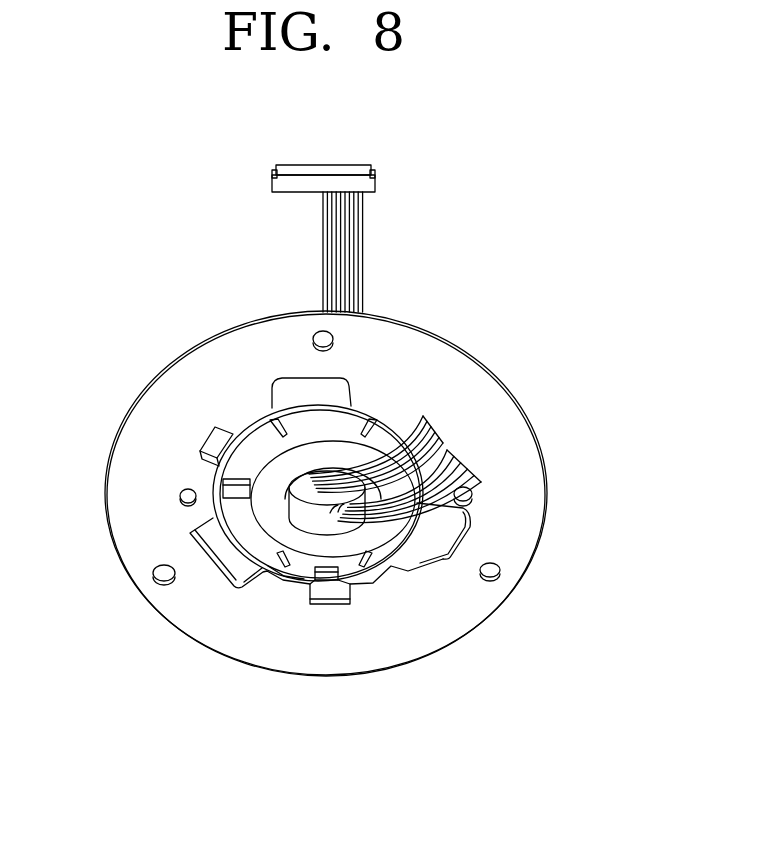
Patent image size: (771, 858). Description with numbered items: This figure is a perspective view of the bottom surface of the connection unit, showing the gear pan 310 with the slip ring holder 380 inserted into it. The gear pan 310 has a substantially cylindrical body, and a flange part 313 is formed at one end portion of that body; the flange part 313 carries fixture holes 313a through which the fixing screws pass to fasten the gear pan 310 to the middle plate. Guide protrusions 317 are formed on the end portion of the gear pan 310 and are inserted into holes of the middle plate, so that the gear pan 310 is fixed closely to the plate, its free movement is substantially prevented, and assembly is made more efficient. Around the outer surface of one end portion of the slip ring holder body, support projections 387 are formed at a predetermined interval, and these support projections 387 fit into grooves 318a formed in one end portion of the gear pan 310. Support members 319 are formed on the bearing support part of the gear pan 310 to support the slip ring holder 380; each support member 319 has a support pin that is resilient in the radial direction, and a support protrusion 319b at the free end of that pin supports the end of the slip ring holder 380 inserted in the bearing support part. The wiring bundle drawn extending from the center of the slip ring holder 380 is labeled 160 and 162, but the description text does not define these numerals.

The gear pan 310 is at (209, 312).
The flange part 313 is at (123, 420).
The fixture holes 313a is at (155, 585).
The guide protrusions 317 is at (180, 502).
The grooves 318a is at (190, 544).
The support members 319 is at (196, 437).
The support protrusion 319b is at (220, 437).
The slip ring holder 380 is at (303, 545).
The support projections 387 is at (235, 552).
The coil 160 is at (395, 563).
The coil lead wires 162 is at (393, 523).